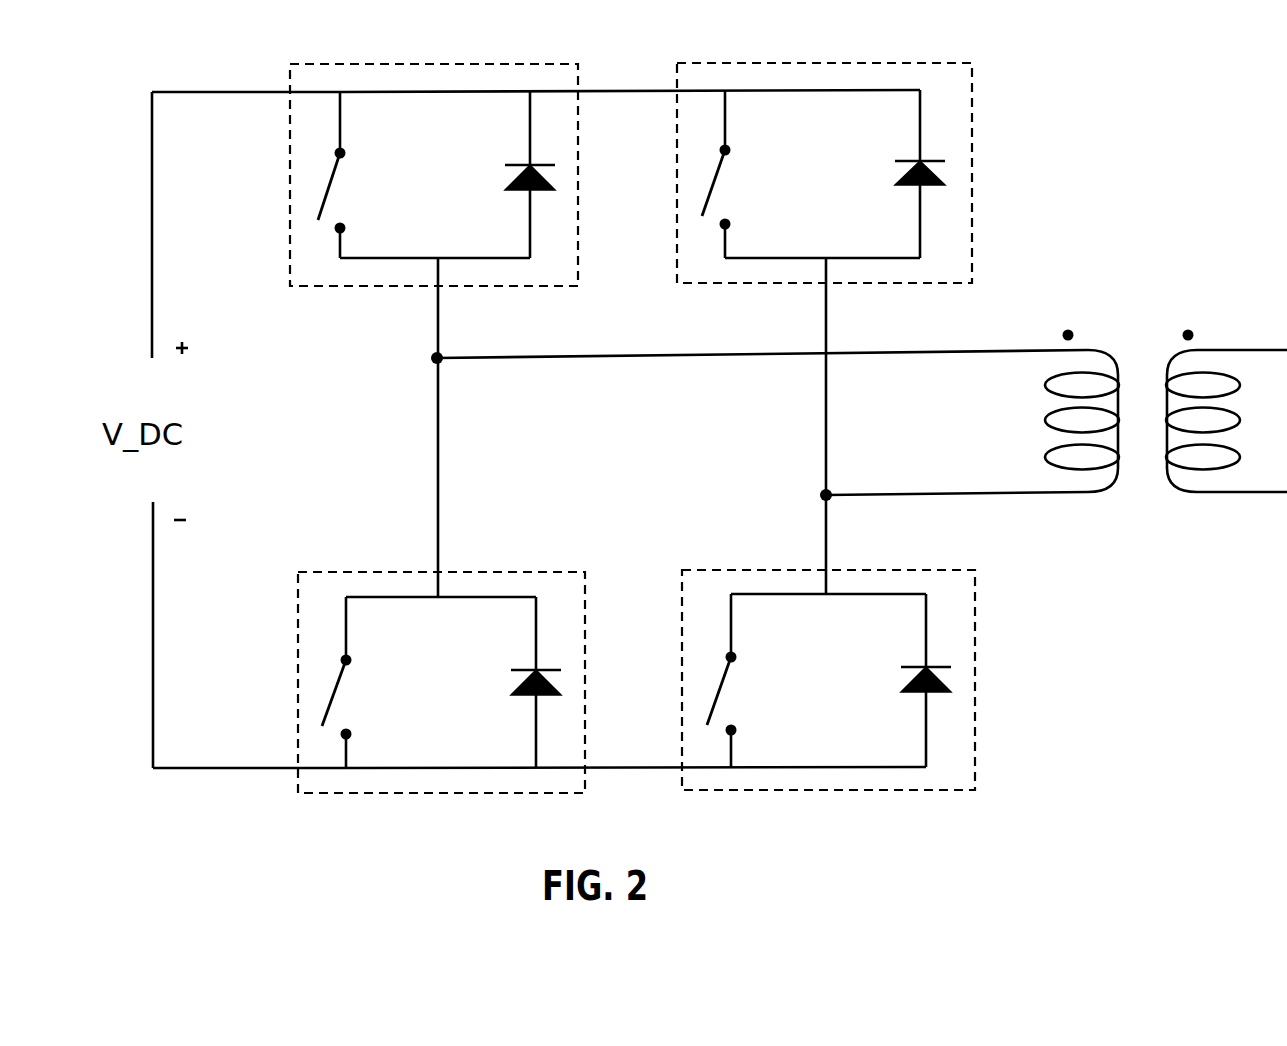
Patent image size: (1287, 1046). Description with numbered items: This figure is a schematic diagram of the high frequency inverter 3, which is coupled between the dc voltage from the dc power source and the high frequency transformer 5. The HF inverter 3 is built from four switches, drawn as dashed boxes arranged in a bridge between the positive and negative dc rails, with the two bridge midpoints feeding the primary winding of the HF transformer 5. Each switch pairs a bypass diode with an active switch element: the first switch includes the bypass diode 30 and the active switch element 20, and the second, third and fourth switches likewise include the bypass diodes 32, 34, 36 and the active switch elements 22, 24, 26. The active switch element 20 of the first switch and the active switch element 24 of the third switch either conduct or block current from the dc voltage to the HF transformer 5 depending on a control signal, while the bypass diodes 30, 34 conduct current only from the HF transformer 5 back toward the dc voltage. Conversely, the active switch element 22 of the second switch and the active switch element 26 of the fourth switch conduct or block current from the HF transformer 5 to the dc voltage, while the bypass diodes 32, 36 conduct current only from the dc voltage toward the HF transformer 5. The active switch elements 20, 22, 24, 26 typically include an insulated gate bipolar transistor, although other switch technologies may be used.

The high frequency inverter 3 is at (638, 449).
The high frequency transformer 5 is at (1134, 281).
The active switch element 20 is at (343, 183).
The active switch element 22 is at (346, 686).
The active switch element 24 is at (727, 178).
The active switch element 26 is at (731, 684).
The bypass diode 30 is at (520, 162).
The bypass diode 32 is at (526, 666).
The bypass diode 34 is at (910, 158).
The bypass diode 36 is at (916, 662).